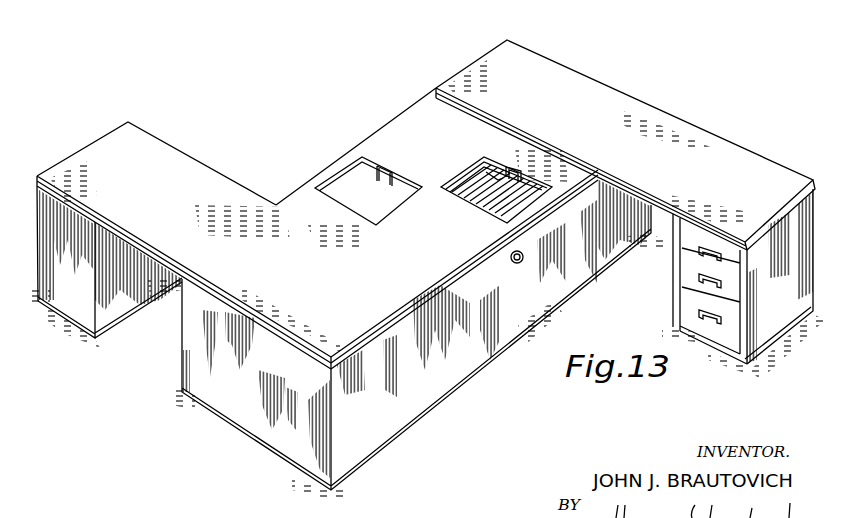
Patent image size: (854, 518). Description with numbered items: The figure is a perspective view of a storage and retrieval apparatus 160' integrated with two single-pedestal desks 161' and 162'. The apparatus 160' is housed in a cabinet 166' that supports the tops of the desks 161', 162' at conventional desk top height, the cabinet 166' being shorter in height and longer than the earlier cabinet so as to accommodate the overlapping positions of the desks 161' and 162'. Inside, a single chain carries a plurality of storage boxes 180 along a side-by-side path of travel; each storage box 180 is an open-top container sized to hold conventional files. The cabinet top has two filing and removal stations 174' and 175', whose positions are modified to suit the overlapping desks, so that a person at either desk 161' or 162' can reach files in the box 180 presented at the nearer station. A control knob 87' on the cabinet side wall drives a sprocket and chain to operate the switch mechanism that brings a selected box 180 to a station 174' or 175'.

The storage and retrieval apparatus 160' is at (418, 294).
The desk 161' is at (630, 210).
The desk 162' is at (184, 245).
The cabinet 166' is at (188, 245).
The filing and removal station 174' is at (490, 187).
The filing and removal station 175' is at (371, 181).
The storage box 180 is at (475, 178).
The control knob 87' is at (502, 268).